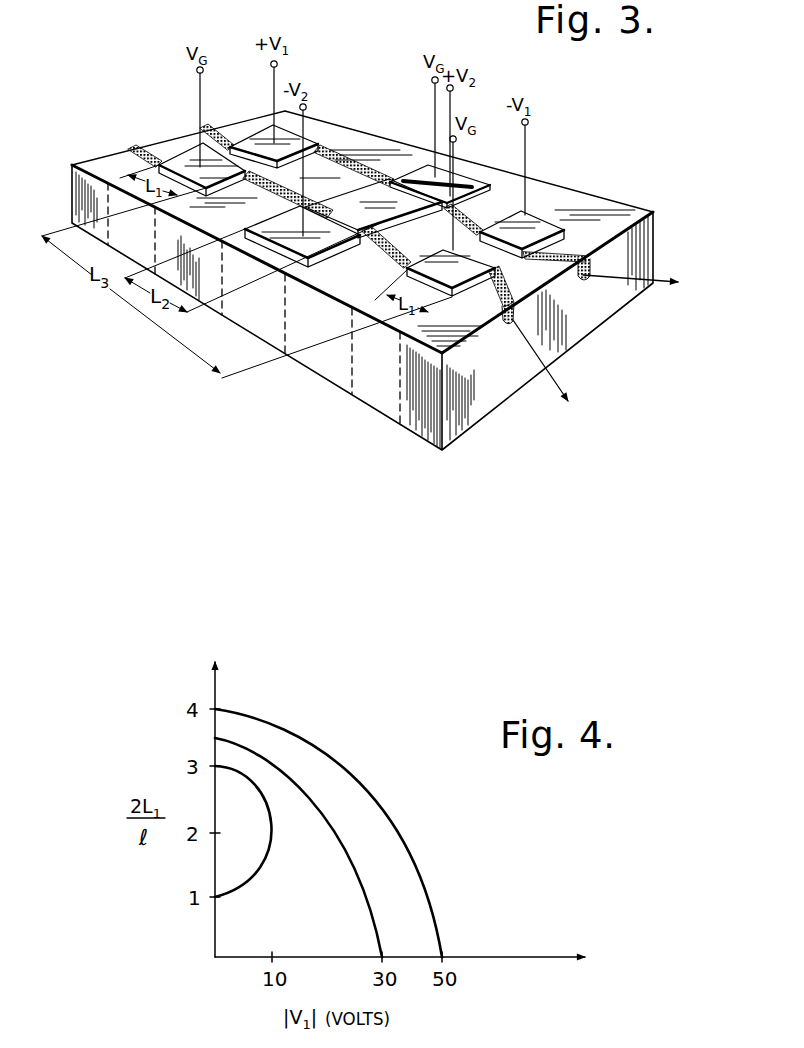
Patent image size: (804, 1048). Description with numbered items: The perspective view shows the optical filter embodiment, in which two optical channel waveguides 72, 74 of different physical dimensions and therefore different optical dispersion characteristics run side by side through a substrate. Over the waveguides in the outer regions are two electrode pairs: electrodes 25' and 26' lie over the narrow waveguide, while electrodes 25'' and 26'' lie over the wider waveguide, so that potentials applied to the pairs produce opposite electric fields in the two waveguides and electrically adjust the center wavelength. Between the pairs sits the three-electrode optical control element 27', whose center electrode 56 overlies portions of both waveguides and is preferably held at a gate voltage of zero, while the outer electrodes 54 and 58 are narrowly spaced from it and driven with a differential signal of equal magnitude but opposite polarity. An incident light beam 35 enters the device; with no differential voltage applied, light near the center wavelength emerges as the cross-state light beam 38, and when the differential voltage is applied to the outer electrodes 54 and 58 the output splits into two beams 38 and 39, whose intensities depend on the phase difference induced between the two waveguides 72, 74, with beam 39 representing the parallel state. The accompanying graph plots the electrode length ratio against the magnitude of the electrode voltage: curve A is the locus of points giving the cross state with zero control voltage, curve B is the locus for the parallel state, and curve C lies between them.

In FIG. 3, the electrode 25'' is at (163, 164).
In FIG. 3, the electrode 25' is at (312, 142).
In FIG. 3, the light beam 35 is at (204, 127).
In FIG. 3, the optical control element 27' is at (342, 215).
In FIG. 3, the outer electrode 58 is at (348, 247).
In FIG. 3, the outer electrode 54 is at (493, 178).
In FIG. 3, the center electrode 56 is at (422, 217).
In FIG. 3, the electrode 26'' is at (451, 285).
In FIG. 3, the electrode 26' is at (532, 211).
In FIG. 3, the optical channel waveguide 72 is at (518, 324).
In FIG. 3, the optical channel waveguide 74 is at (584, 255).
In FIG. 3, the light beam 39 is at (661, 279).
In FIG. 3, the light beam 38 is at (547, 383).
In FIG. 4, the curve A is at (247, 880).
In FIG. 4, the curve B is at (421, 874).
In FIG. 4, the curve C is at (357, 874).